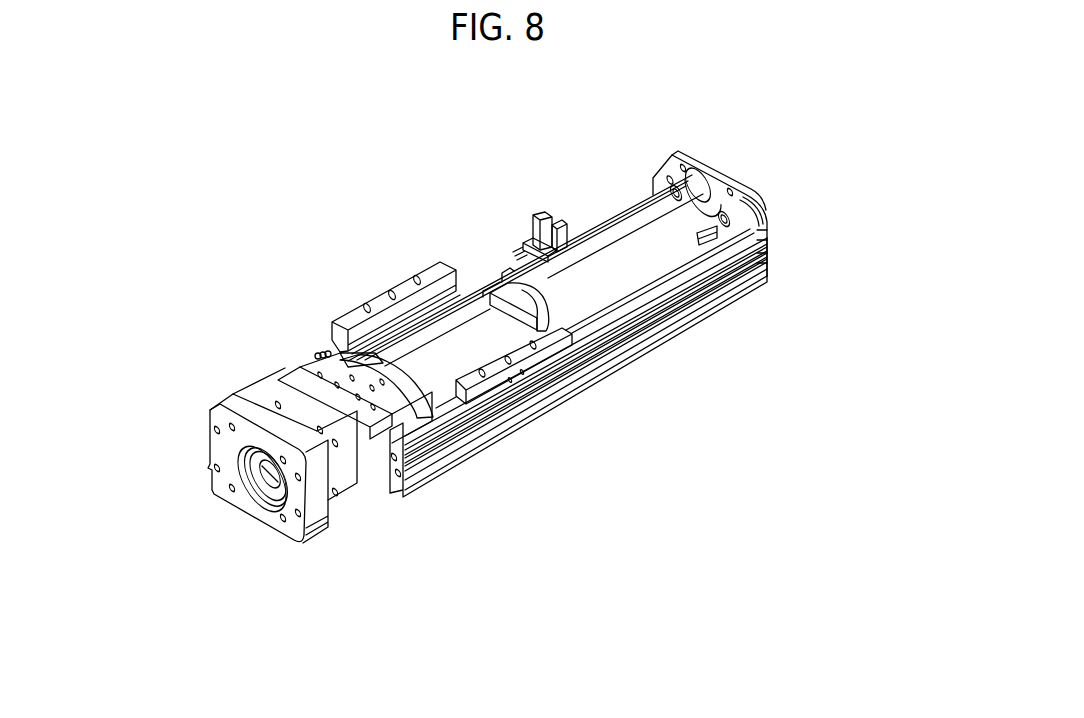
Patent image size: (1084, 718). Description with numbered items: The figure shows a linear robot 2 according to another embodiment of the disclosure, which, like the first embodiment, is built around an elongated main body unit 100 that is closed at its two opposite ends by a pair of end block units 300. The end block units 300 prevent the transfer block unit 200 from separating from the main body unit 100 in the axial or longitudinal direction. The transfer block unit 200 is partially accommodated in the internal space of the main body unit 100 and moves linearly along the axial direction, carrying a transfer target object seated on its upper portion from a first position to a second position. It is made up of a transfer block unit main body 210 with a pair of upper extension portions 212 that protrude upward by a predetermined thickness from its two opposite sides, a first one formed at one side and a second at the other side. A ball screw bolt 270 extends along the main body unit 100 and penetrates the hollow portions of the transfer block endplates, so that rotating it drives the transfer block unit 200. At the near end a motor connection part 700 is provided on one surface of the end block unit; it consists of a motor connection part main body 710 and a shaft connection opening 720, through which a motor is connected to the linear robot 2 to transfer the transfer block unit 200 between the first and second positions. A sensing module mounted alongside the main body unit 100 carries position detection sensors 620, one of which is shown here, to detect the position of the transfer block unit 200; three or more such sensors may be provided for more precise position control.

The linear robot 2 is at (165, 211).
The main body unit 100 is at (513, 437).
The transfer block unit 200 is at (304, 309).
The transfer block unit main body 210 is at (386, 274).
The upper extension portions 212 is at (432, 267).
The ball screw bolt 270 is at (653, 240).
The end block units 300 is at (763, 201).
The position detection sensors 620 is at (543, 206).
The motor connection part 700 is at (282, 552).
The motor connection part main body 710 is at (207, 483).
The shaft connection opening 720 is at (263, 485).